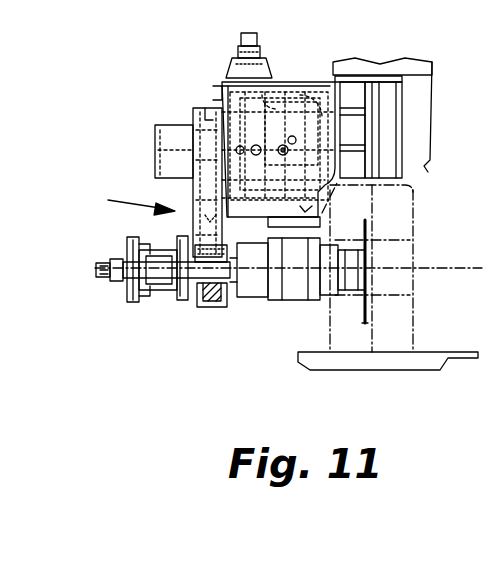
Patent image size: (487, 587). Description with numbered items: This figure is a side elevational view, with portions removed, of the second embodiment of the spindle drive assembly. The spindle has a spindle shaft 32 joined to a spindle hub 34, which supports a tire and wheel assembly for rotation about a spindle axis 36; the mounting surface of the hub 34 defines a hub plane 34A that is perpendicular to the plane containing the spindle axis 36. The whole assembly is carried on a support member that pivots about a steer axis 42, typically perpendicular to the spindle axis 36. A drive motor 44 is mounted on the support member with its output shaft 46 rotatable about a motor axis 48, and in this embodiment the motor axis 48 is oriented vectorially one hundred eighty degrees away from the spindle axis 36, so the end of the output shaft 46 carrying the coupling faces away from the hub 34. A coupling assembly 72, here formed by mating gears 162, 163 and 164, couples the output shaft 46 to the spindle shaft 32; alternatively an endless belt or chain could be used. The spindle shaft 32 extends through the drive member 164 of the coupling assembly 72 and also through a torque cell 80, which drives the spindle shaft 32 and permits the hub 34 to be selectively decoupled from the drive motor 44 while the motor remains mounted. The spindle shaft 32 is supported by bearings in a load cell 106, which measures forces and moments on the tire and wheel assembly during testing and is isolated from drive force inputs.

The spindle shaft 32 is at (152, 258).
The spindle hub 34 is at (367, 258).
The hub plane 34A is at (365, 317).
The spindle axis 36 is at (255, 268).
The steer axis 42 is at (372, 223).
The drive motor 44 is at (271, 108).
The output shaft 46 is at (200, 160).
The motor axis 48 is at (185, 130).
The coupling assembly 72 is at (126, 202).
The torque cell 80 is at (158, 290).
The load cell 106 is at (288, 300).
The mating gear 162 is at (203, 122).
The mating gear 163 is at (207, 205).
The drive member 164 is at (213, 300).